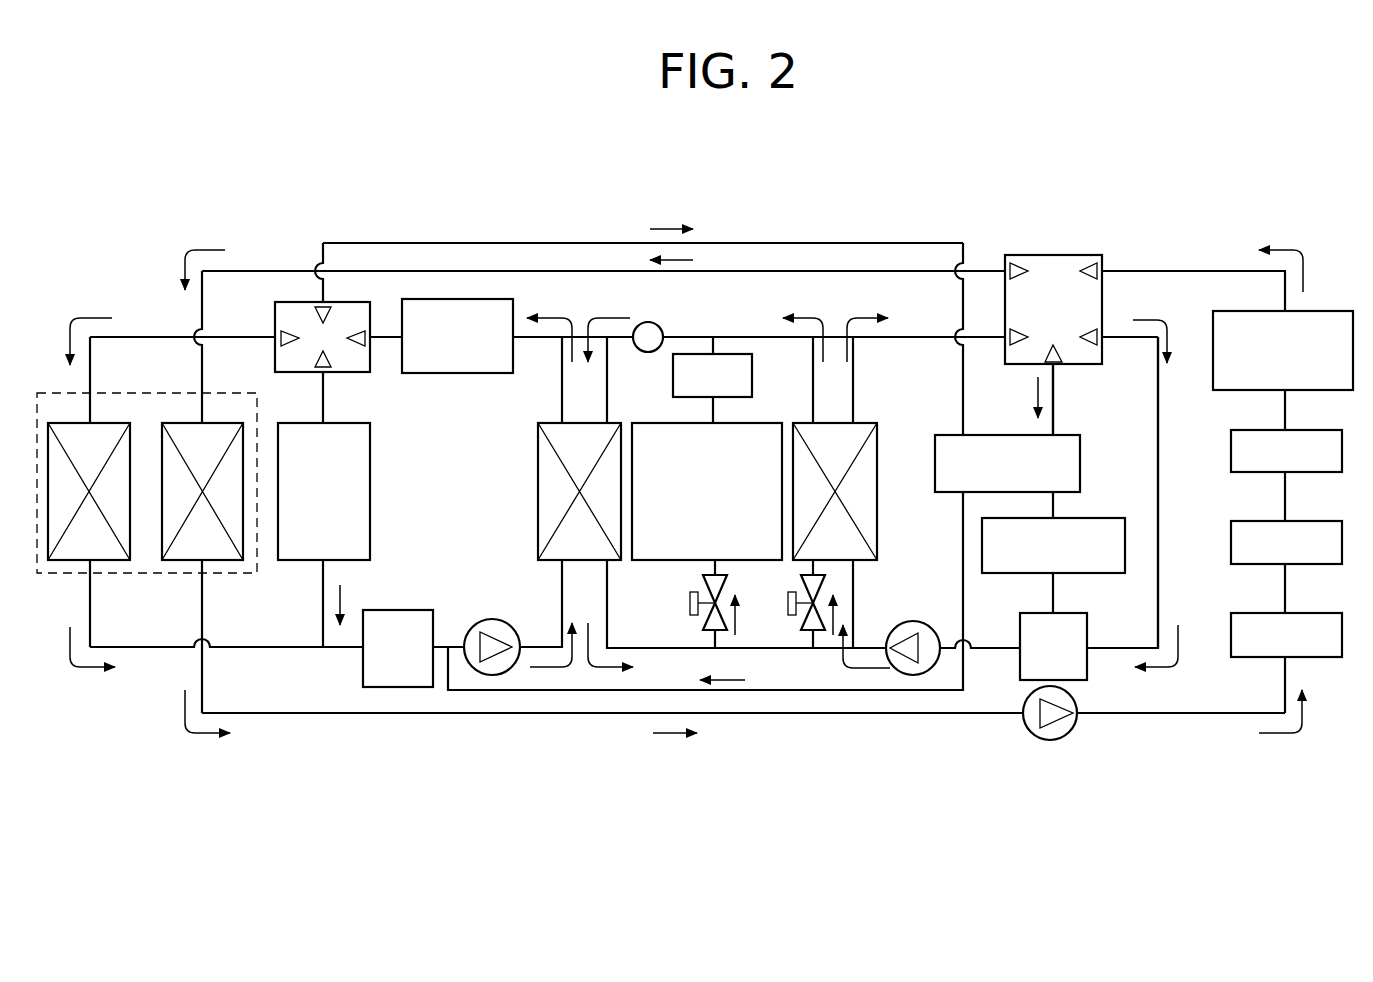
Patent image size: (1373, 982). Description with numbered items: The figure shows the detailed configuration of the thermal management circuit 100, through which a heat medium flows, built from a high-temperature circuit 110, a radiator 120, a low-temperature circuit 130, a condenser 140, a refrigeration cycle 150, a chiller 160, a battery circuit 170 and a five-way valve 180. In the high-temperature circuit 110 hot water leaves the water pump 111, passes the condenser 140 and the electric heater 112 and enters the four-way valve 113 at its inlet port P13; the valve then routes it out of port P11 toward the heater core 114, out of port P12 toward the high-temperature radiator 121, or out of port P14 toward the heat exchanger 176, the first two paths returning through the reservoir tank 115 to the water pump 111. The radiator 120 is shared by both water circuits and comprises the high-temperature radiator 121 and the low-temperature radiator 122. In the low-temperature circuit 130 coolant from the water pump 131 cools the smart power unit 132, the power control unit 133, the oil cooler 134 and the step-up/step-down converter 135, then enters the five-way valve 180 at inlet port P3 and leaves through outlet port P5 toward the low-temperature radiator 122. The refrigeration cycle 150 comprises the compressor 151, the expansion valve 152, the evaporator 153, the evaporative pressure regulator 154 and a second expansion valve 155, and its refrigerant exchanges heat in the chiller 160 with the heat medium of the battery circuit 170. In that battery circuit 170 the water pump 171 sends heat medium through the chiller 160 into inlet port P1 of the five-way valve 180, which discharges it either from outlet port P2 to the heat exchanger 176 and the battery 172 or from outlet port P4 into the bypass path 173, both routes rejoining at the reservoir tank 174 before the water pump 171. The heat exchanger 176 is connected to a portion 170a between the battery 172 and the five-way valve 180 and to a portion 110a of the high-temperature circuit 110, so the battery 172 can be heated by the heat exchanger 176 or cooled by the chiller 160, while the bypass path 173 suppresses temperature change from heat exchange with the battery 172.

The thermal management circuit 100 is at (292, 150).
The high-temperature circuit 110 is at (222, 330).
The portion of the high-temperature circuit 110a is at (963, 412).
The water pump 111 is at (505, 623).
The electric heater 112 is at (500, 298).
The four-way valve 113 is at (318, 342).
The heater core 114 is at (372, 465).
The reservoir tank 115 is at (407, 610).
The radiator 120 is at (158, 484).
The high-temperature radiator 121 is at (102, 563).
The low-temperature radiator 122 is at (213, 563).
The low-temperature circuit 130 is at (1193, 262).
The water pump 131 is at (1072, 695).
The smart power unit 132 is at (1305, 613).
The power control unit 133 is at (1305, 521).
The oil cooler 134 is at (1305, 430).
The step-up/step-down converter 135 is at (1313, 311).
The condenser 140 is at (613, 421).
The refrigeration cycle 150 is at (678, 325).
The compressor 151 is at (648, 321).
The expansion valve 152 is at (703, 580).
The evaporator 153 is at (745, 423).
The evaporative pressure regulator 154 is at (747, 354).
The expansion valve 155 is at (802, 580).
The chiller 160 is at (865, 423).
The battery circuit 170 is at (920, 327).
The portion between the battery and the five-way valve 170a is at (1058, 413).
The water pump 171 is at (917, 620).
The battery 172 is at (1082, 518).
The bypass path 173 is at (1158, 412).
The reservoir tank 174 is at (1068, 613).
The heat exchanger 176 is at (1082, 463).
The five-way valve 180 is at (1055, 304).
The port P1 is at (1010, 333).
The port P2 is at (1057, 368).
The port P3 is at (1105, 257).
The port P4 is at (1098, 327).
The port P5 is at (1013, 260).
The port P11 is at (322, 368).
The port P12 is at (280, 345).
The port P13 is at (358, 346).
The port P14 is at (318, 306).